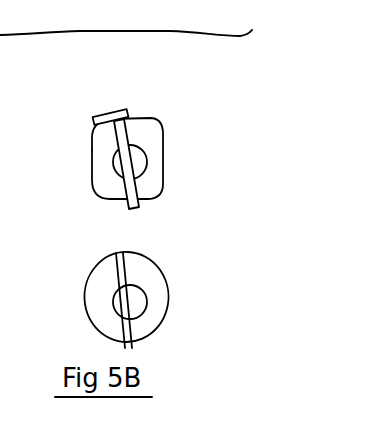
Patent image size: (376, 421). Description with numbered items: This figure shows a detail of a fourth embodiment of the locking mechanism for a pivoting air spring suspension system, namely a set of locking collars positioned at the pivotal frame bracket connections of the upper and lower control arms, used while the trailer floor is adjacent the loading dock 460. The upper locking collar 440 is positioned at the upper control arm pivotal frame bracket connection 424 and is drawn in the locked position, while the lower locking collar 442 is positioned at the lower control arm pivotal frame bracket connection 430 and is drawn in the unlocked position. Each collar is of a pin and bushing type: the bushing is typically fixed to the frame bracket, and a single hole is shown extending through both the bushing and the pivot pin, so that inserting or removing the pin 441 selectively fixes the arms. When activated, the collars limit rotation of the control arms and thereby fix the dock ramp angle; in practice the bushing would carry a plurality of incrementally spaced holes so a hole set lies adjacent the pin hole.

The loading dock 460 is at (112, 77).
The pin 441 is at (127, 110).
The locking collar 440 is at (97, 176).
The pivotal frame bracket connection 424 is at (138, 156).
The locking collar 442 is at (95, 305).
The pivotal frame bracket connection 430 is at (147, 300).